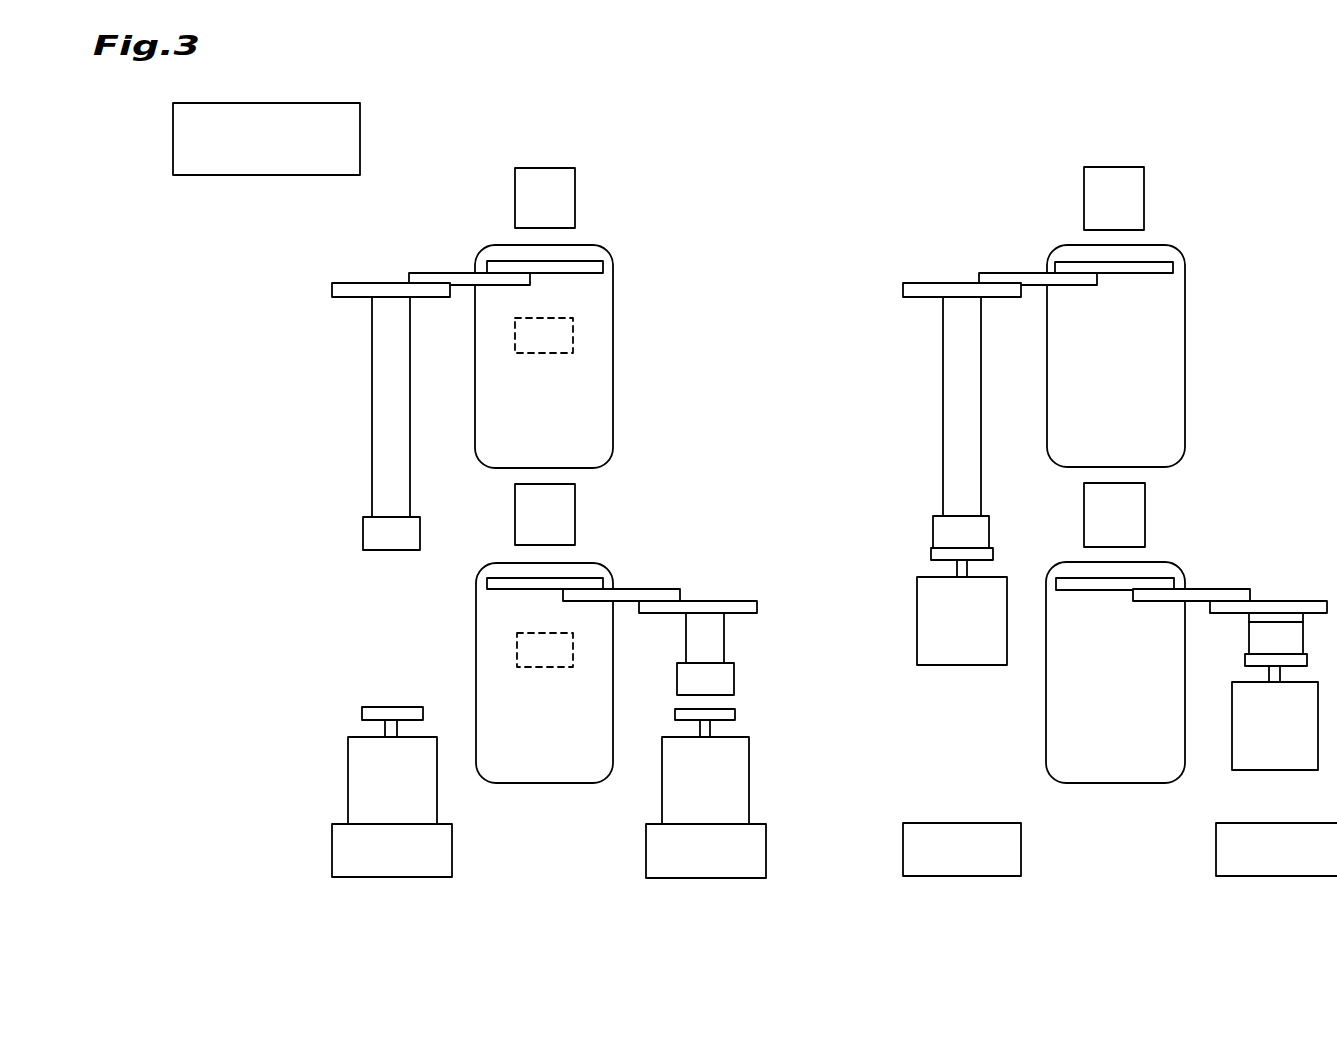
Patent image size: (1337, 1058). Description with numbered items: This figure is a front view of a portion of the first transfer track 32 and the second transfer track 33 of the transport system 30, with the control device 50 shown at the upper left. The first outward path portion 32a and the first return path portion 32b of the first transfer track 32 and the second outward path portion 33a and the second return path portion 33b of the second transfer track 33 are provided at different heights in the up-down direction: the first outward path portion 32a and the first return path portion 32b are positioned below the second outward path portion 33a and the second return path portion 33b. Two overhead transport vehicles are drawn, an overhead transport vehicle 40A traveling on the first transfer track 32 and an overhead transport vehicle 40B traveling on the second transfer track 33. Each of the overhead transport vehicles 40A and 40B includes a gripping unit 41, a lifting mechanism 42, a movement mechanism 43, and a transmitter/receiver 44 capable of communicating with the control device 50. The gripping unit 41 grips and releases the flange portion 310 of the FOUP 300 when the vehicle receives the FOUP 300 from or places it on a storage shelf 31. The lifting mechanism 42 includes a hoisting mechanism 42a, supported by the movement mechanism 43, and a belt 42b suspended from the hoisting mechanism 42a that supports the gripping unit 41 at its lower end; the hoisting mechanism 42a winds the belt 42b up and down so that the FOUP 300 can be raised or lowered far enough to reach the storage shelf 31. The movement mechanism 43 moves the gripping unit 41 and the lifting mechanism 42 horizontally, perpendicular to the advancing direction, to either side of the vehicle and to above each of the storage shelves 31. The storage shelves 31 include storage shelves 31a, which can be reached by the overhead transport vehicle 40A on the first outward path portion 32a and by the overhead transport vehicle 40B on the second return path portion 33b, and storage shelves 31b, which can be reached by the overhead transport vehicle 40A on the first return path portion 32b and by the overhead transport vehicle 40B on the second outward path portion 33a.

The substrate processing apparatus 30 is at (1226, 136).
The control device 50 is at (361, 113).
The storage shelves 31 is at (834, 879).
The storage shelf 31a is at (392, 858).
The storage shelf 31b is at (962, 862).
The first transfer track 32 is at (901, 515).
The first outward path portion 32a is at (572, 510).
The first return path portion 32b is at (1143, 512).
The second transfer track 33 is at (835, 168).
The second outward path portion 33a is at (1115, 180).
The second return path portion 33b is at (540, 180).
The overhead transport vehicle 40A is at (543, 790).
The overhead transport vehicle 40B is at (482, 242).
The gripping unit 41 is at (370, 533).
The lifting mechanism 42 is at (760, 468).
The hoisting mechanism 42a is at (332, 292).
The belt 42b is at (372, 413).
The movement mechanism 43 is at (601, 266).
The transmitter/receiver 44 is at (572, 337).
The FOUP 300 is at (358, 775).
The flange portion 310 is at (362, 714).